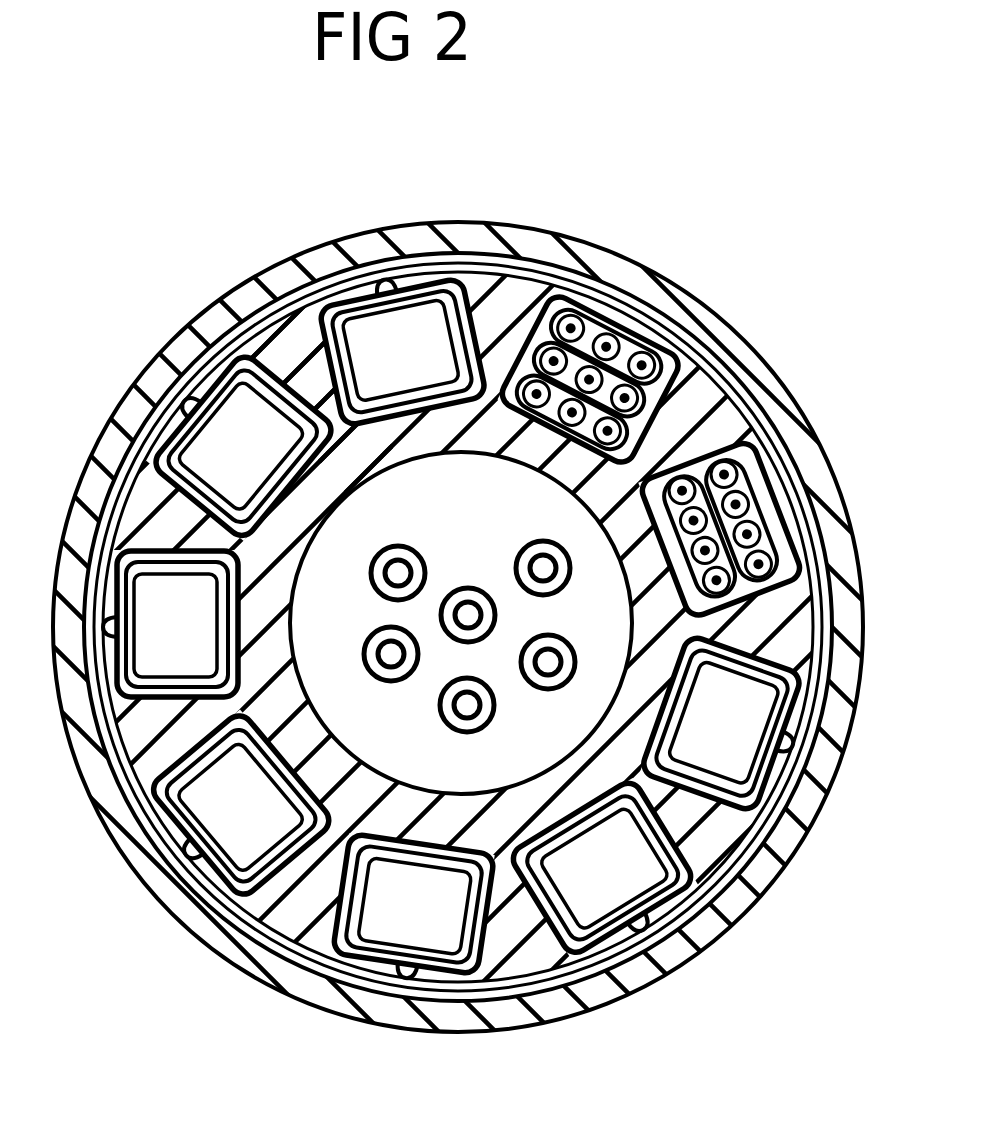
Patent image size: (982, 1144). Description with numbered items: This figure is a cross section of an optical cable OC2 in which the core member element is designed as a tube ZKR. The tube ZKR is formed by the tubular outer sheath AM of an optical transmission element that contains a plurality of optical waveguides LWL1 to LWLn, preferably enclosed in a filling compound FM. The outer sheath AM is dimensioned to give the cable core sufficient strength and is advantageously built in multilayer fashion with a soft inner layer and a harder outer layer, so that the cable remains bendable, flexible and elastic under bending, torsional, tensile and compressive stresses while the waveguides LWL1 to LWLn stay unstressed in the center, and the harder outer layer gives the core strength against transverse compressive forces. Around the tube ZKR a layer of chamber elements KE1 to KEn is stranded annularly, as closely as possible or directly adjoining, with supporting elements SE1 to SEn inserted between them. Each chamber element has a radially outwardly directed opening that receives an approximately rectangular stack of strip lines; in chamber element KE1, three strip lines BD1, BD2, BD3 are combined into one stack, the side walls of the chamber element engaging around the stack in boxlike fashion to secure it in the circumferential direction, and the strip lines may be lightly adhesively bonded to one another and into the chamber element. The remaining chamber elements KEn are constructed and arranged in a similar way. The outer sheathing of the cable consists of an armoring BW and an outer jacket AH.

The optical cable OC2 is at (461, 676).
The outer jacket AH is at (566, 1005).
The armoring BW is at (503, 992).
The supporting element SE1 is at (517, 292).
The supporting element SEn is at (293, 347).
The chamber element KE1 is at (671, 304).
The chamber element KEn is at (346, 330).
The strip line BD1 is at (606, 347).
The strip line BD2 is at (589, 380).
The strip line BD3 is at (572, 413).
The outer sheath AM is at (652, 714).
The filling compound FM is at (298, 752).
The tube ZKR is at (424, 874).
The optical waveguide LWL1 is at (441, 708).
The optical waveguide LWLn is at (545, 540).